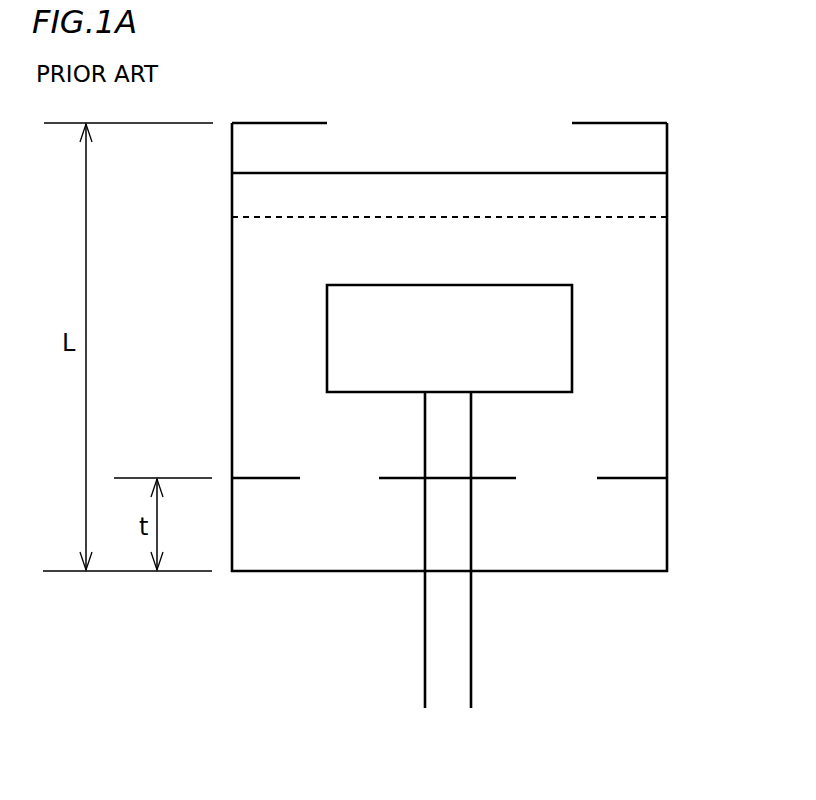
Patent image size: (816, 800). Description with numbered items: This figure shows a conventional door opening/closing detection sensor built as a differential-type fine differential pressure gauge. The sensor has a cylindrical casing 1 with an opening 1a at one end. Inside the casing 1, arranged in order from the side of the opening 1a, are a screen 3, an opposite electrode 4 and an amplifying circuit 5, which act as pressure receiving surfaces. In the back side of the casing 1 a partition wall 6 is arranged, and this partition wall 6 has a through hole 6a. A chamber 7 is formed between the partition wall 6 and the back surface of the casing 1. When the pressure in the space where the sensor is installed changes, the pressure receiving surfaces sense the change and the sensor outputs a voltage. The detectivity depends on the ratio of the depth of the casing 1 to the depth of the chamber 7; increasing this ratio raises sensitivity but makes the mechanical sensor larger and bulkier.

The cylindrical casing 1 is at (668, 297).
The opening 1a is at (370, 138).
The screen 3 is at (636, 173).
The opposite electrode 4 is at (630, 217).
The amplifying circuit 5 is at (541, 358).
The partition wall 6 is at (632, 478).
The through hole 6a is at (553, 478).
The chamber 7 is at (617, 547).